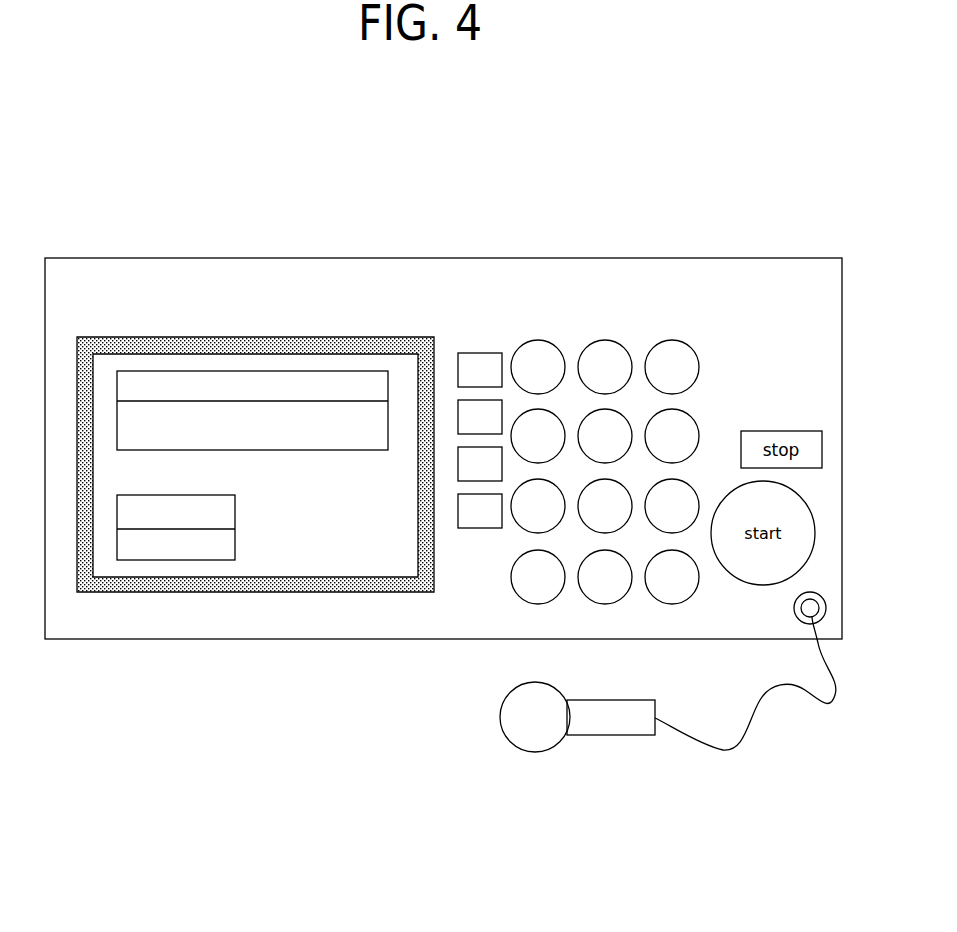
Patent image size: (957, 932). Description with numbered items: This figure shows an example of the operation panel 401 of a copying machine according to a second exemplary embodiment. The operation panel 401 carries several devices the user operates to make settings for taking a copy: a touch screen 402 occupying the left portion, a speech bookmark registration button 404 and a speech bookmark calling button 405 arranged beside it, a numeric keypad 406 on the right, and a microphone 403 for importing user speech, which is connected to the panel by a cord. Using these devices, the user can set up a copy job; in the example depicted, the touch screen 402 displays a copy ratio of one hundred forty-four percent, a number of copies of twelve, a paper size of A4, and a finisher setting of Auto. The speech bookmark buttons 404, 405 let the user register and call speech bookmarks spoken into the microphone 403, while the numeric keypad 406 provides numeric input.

The operation panel 401 is at (84, 270).
The touch screen 402 is at (102, 560).
The microphone 403 is at (585, 728).
The speech bookmark registration button 404 is at (463, 413).
The speech bookmark calling button 405 is at (477, 363).
The numeric keypad 406 is at (610, 322).